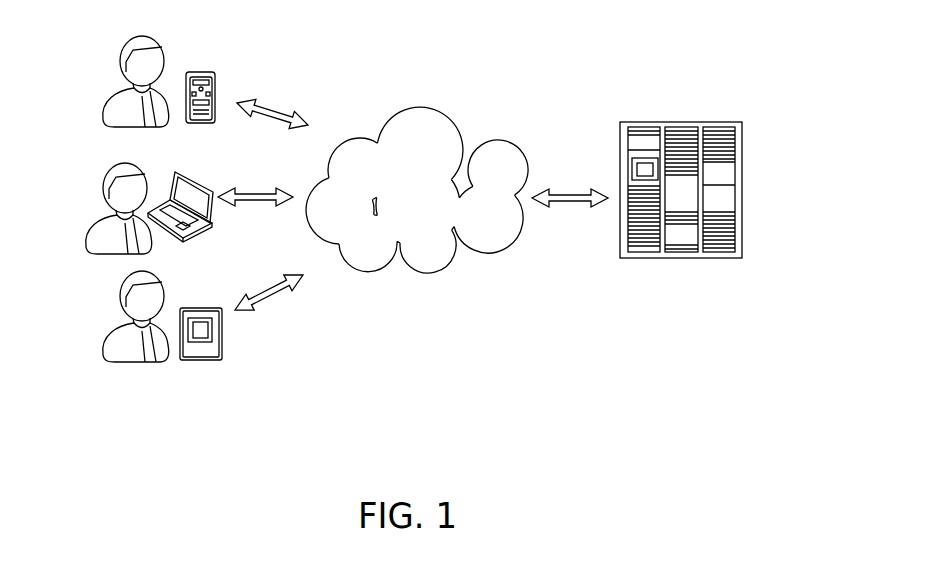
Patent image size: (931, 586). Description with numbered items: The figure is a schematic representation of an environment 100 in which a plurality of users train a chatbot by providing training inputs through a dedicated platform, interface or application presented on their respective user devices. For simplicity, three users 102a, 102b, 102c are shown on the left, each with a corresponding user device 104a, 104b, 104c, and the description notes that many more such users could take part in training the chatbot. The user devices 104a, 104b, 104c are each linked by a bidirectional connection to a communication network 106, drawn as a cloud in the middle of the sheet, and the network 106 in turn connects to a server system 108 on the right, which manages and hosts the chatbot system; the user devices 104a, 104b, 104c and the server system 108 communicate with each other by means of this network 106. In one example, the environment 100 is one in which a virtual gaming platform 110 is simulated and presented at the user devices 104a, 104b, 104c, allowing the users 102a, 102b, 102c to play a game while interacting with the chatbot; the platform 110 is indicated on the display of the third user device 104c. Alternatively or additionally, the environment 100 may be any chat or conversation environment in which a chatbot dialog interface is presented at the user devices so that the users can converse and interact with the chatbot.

The environment 100 is at (753, 395).
The user 102a is at (108, 90).
The user 102b is at (95, 214).
The user 102c is at (108, 326).
The user device 104a is at (207, 73).
The user device 104b is at (192, 178).
The user device 104c is at (219, 326).
The communication network 106 is at (402, 227).
The server system 108 is at (742, 180).
The virtual gaming platform 110 is at (220, 340).